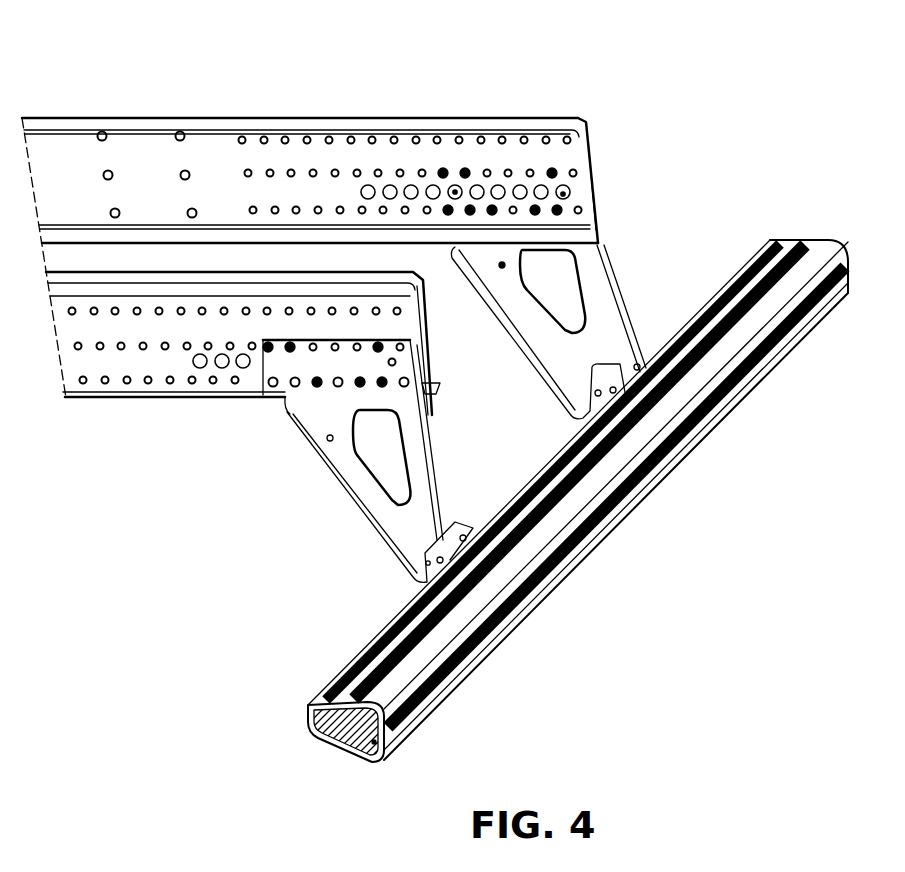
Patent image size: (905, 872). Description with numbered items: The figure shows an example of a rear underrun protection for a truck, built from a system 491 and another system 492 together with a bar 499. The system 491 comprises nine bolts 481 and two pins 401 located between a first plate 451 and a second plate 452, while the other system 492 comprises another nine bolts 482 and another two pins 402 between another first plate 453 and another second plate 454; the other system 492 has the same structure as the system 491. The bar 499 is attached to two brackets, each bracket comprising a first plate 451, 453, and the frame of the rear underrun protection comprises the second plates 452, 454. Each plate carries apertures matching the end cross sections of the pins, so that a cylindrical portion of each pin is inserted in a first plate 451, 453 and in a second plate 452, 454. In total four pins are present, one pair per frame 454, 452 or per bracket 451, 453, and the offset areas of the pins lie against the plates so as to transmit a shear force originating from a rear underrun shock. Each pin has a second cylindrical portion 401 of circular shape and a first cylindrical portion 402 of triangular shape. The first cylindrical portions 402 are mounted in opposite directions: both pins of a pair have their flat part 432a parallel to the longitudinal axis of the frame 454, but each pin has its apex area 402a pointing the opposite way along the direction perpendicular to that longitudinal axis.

The second plate 452 is at (206, 112).
The second plate 454 is at (135, 328).
The bolts 481 is at (530, 197).
The bolts 482 is at (289, 354).
The second cylindrical portion 401 is at (562, 198).
The first cylindrical portion 402 is at (432, 388).
The apex area 402a is at (401, 390).
The flat part 432a is at (395, 363).
The system 491 is at (617, 200).
The system 492 is at (297, 478).
The first plate 451 is at (592, 293).
The first plate 453 is at (393, 522).
The bar 499 is at (653, 493).